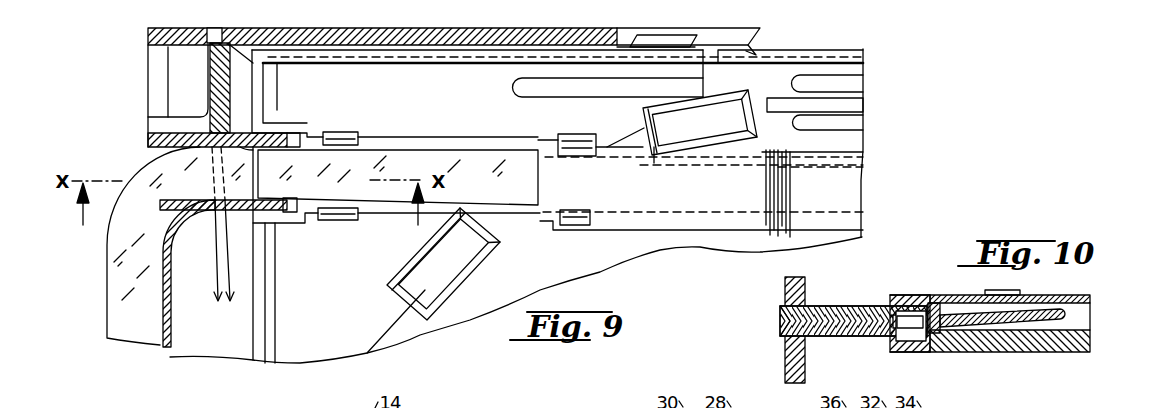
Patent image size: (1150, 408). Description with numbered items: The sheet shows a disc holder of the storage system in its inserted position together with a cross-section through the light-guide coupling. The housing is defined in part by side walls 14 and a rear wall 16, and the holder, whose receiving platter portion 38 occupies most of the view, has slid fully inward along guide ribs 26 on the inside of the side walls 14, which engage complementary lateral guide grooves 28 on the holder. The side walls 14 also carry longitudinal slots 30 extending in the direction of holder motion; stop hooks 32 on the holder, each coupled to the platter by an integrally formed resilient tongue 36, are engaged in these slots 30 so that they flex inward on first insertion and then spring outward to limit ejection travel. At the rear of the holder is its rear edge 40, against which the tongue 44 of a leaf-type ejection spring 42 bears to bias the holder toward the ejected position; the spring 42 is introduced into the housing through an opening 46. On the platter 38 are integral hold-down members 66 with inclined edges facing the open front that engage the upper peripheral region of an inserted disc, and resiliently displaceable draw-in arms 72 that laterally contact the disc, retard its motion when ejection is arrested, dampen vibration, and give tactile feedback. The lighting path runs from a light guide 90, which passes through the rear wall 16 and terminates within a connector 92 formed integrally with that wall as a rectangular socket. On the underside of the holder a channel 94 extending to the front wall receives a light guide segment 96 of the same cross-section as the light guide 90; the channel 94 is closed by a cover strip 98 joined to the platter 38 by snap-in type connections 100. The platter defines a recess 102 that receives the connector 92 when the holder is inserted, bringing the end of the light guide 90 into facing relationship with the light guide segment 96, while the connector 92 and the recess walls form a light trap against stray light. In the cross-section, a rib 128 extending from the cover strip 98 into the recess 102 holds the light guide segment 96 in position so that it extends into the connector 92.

In FIG. 9, the side walls 14 is at (417, 36).
In FIG. 9, the rear wall 16 is at (160, 340).
In FIG. 10, the rear wall 16 is at (785, 336).
In FIG. 9, the guide ribs 26 is at (705, 55).
In FIG. 9, the lateral guide grooves 28 is at (340, 57).
In FIG. 9, the longitudinal slots 30 is at (627, 40).
In FIG. 9, the stop hooks 32 is at (657, 42).
In FIG. 9, the resilient tongues 36 is at (540, 76).
In FIG. 9, the receiving platter portion 38 is at (301, 303).
In FIG. 10, the receiving platter portion 38 is at (1032, 336).
In FIG. 9, the rear edge 40 is at (250, 308).
In FIG. 9, the ejection springs 42 is at (207, 70).
In FIG. 9, the tongues 44 is at (213, 251).
In FIG. 9, the openings 46 is at (157, 90).
In FIG. 9, the hold-down members 66 is at (697, 135).
In FIG. 9, the draw-in arms 72 is at (853, 105).
In FIG. 9, the light guides 90 is at (130, 328).
In FIG. 10, the light guides 90 is at (785, 318).
In FIG. 9, the connectors 92 is at (283, 212).
In FIG. 10, the connectors 92 is at (903, 340).
In FIG. 9, the channel 94 is at (515, 207).
In FIG. 10, the channel 94 is at (1087, 324).
In FIG. 9, the light guide segment 96 is at (480, 162).
In FIG. 10, the light guide segment 96 is at (990, 322).
In FIG. 9, the cover strip 98 is at (630, 217).
In FIG. 10, the cover strip 98 is at (1085, 304).
In FIG. 9, the snap-in type connections 100 is at (336, 132).
In FIG. 10, the snap-in type connections 100 is at (993, 292).
In FIG. 9, the recess 102 is at (305, 216).
In FIG. 10, the recess 102 is at (907, 295).
In FIG. 10, the rib 128 is at (943, 318).